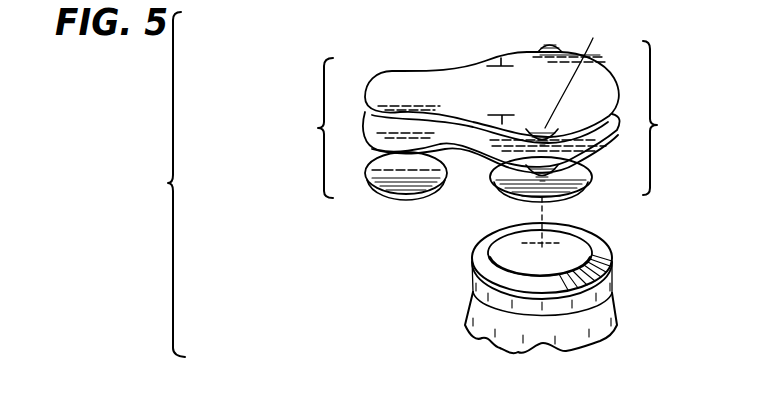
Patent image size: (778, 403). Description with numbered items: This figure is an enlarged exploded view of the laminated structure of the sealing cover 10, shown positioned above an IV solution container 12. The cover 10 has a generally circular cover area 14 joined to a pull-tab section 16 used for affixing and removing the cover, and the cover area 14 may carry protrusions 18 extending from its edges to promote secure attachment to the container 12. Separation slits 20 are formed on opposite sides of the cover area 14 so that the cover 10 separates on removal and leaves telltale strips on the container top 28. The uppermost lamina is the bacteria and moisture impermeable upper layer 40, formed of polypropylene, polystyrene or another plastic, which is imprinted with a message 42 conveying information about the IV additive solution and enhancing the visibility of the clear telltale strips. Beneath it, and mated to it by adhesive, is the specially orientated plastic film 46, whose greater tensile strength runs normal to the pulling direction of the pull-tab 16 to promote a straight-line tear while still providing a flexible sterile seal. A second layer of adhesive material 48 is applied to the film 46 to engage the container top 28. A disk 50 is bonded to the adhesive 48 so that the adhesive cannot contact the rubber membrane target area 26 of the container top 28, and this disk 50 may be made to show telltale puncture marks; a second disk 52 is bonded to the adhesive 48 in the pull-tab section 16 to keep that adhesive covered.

The sealing cover 10 is at (298, 178).
The IV solution container 12 is at (500, 337).
The cover area 14 is at (688, 137).
The pull-tab section 16 is at (314, 139).
The protrusions 18 is at (548, 43).
The separation slits 20 is at (501, 60).
The target area 26 is at (570, 248).
The container top 28 is at (587, 310).
The upper layer 40 is at (379, 83).
The message 42 is at (600, 80).
The orientated plastic film 46 is at (396, 128).
The second layer of adhesive material 48 is at (398, 152).
The disk 50 is at (517, 177).
The disk 52 is at (419, 180).